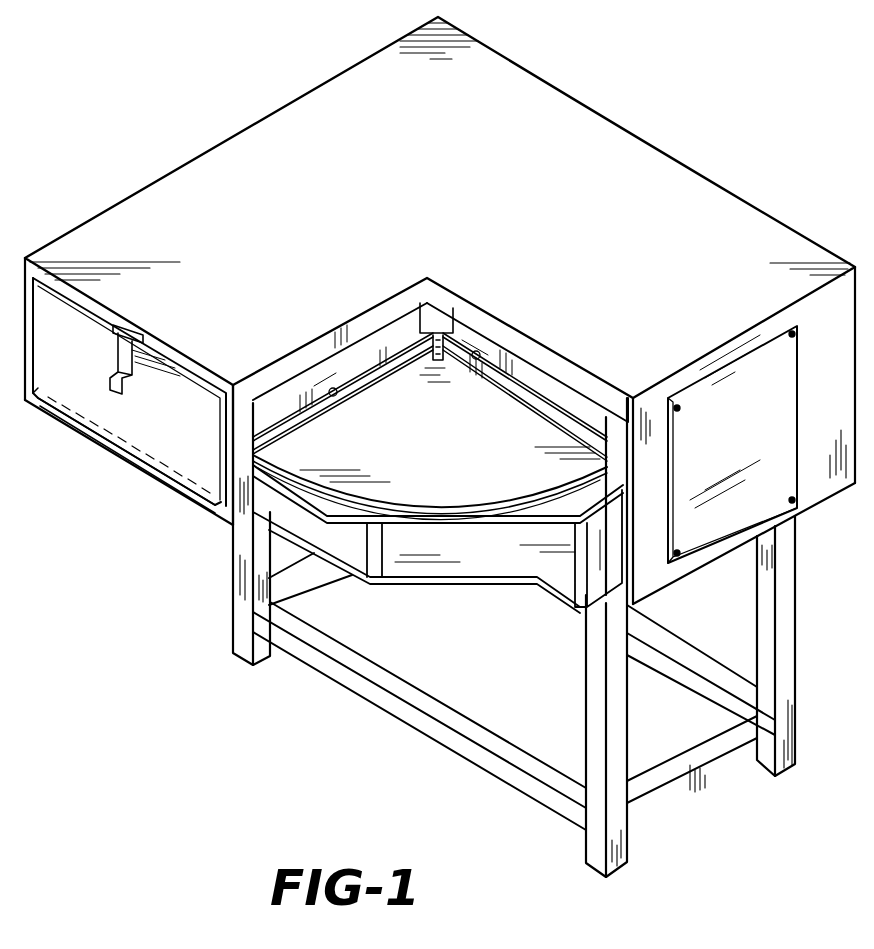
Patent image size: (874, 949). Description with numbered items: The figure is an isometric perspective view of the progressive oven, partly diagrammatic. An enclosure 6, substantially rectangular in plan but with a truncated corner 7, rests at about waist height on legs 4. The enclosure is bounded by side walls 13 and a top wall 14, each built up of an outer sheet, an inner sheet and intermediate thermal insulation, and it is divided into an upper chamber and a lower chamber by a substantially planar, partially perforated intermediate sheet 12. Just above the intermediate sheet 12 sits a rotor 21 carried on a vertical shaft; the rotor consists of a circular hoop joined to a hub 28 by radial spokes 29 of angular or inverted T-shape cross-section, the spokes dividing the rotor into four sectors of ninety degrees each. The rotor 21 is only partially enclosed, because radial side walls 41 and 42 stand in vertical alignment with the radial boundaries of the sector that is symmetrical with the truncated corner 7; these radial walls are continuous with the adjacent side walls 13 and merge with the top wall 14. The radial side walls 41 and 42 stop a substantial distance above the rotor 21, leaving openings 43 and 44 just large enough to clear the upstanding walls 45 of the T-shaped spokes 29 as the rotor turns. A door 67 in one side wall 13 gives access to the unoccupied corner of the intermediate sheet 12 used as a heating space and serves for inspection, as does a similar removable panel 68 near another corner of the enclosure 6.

The legs 4 is at (237, 622).
The enclosure 6 is at (736, 183).
The truncated corner 7 is at (453, 590).
The intermediate sheet 12 is at (533, 525).
The side walls 13 is at (228, 513).
The top wall 14 is at (282, 128).
The rotor 21 is at (361, 491).
The hub 28 is at (443, 354).
The radial spokes 29 is at (305, 437).
The radial side wall 41 is at (363, 353).
The radial side wall 42 is at (574, 403).
The opening 43 is at (333, 388).
The opening 44 is at (477, 352).
The upstanding walls 45 is at (392, 358).
The door 67 is at (129, 395).
The removable panel 68 is at (762, 439).